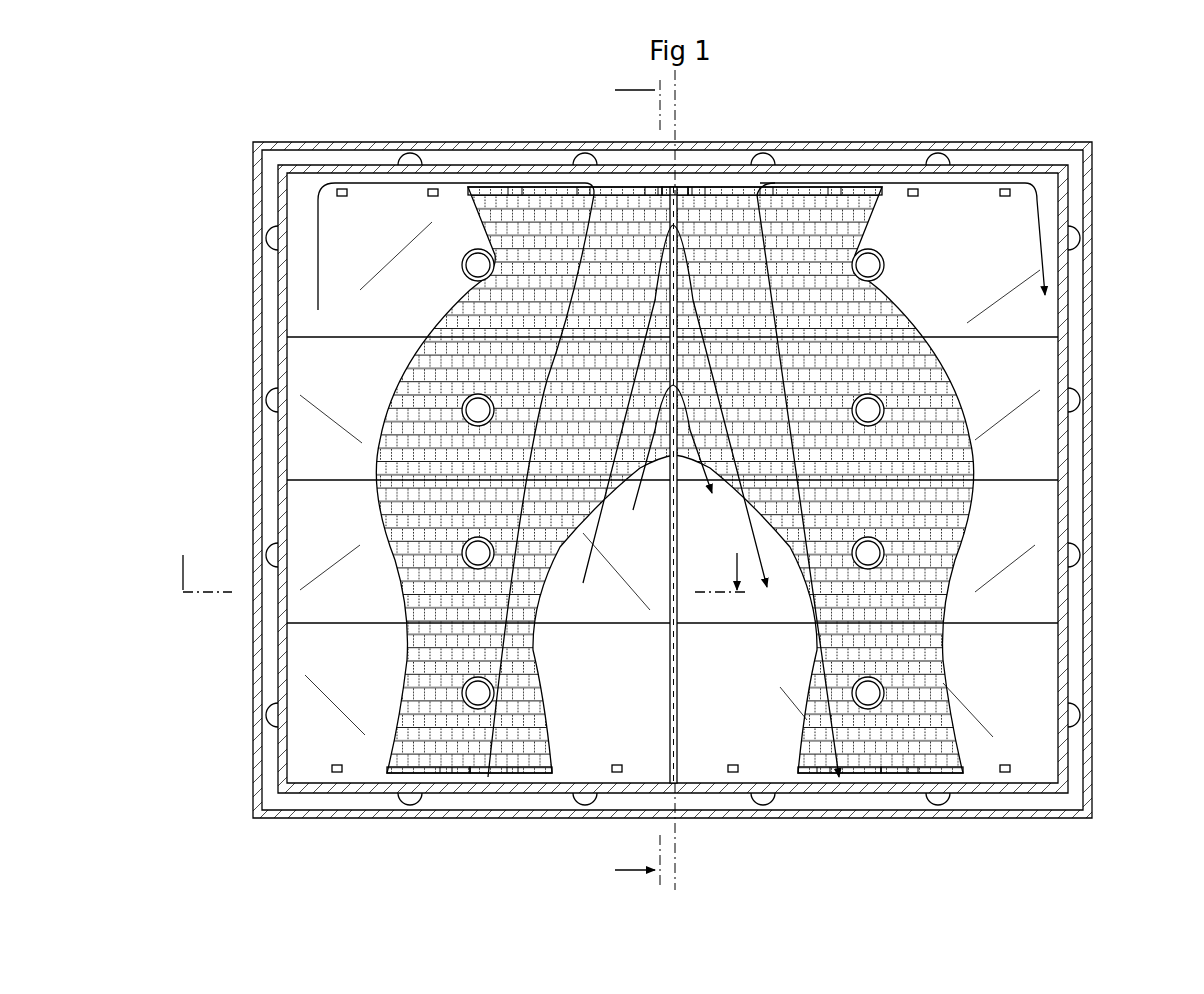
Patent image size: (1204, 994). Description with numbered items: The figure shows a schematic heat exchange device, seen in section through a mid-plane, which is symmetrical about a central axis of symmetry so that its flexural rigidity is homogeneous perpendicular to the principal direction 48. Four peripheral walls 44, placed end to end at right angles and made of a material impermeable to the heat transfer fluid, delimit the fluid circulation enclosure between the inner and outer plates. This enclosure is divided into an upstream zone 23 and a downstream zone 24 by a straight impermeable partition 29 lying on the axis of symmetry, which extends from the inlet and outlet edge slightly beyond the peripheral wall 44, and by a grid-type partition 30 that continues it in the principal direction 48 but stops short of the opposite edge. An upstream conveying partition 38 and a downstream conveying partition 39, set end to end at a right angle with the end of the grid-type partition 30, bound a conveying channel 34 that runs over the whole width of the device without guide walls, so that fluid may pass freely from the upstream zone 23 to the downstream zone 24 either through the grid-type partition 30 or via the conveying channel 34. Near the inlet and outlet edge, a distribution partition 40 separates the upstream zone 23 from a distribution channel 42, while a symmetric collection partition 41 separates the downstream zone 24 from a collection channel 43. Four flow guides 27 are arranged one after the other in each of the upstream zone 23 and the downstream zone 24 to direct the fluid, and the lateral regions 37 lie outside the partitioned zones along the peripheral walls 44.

The upstream zone 23 is at (408, 433).
The downstream zone 24 is at (930, 435).
The flow guides 27 is at (310, 293).
The impermeable partition 29 is at (678, 645).
The grid-type partition 30 is at (673, 273).
The conveying channel 34 is at (695, 178).
The right side panels 37 is at (1013, 248).
The upstream conveying partition 38 is at (532, 190).
The downstream conveying partition 39 is at (862, 190).
The distribution partition 40 is at (492, 772).
The collection partition 41 is at (948, 770).
The distribution channel 42 is at (533, 780).
The collection channel 43 is at (883, 778).
The peripheral walls 44 is at (290, 350).
The principal direction 48 is at (678, 855).